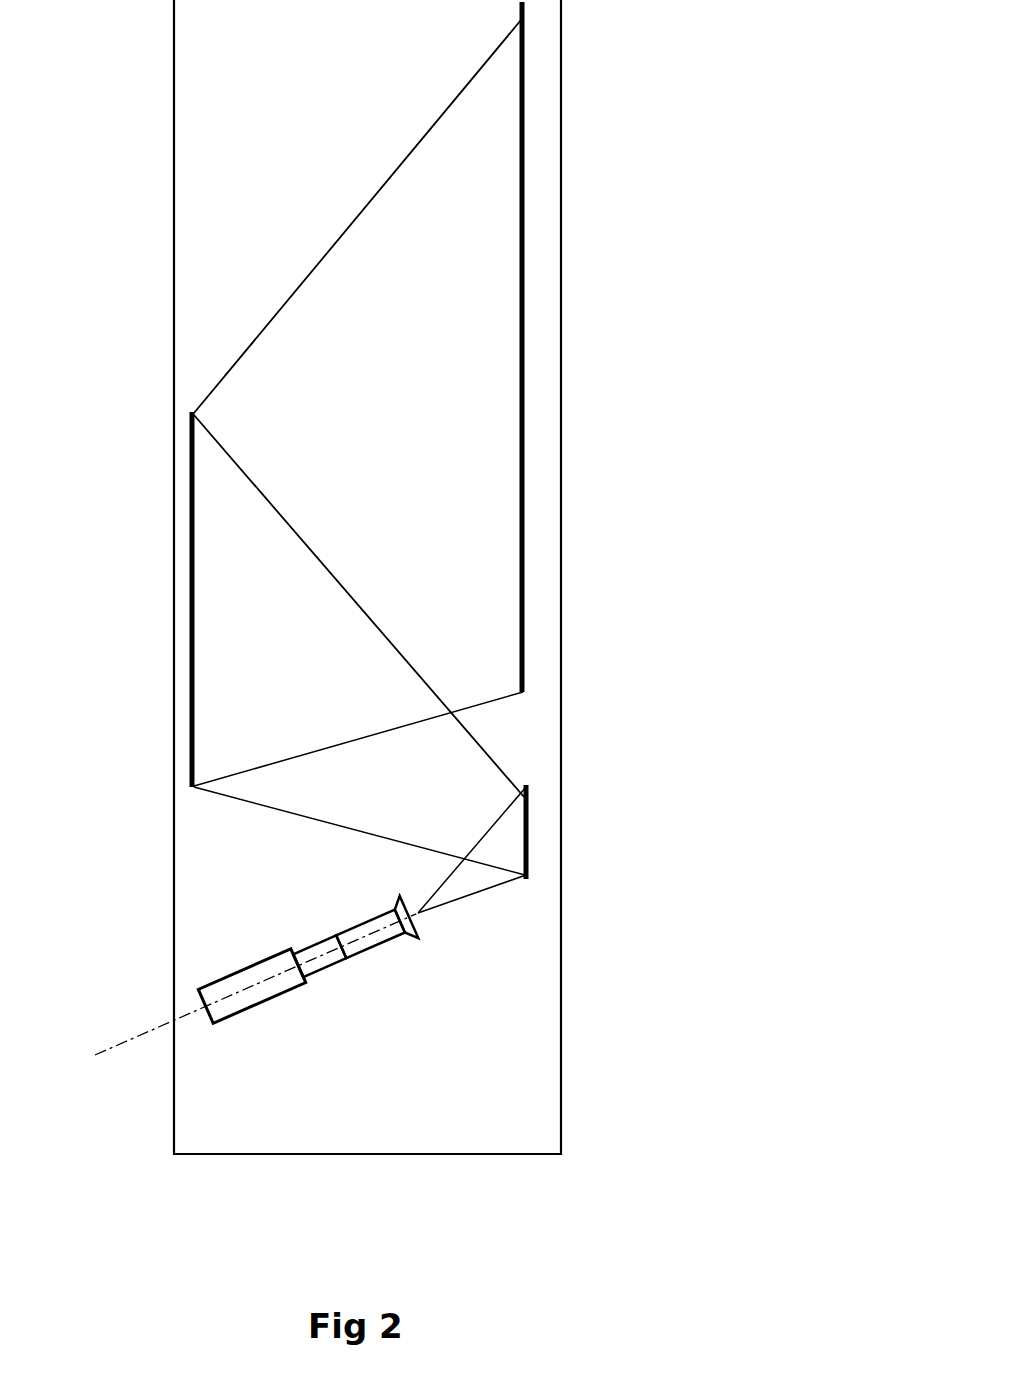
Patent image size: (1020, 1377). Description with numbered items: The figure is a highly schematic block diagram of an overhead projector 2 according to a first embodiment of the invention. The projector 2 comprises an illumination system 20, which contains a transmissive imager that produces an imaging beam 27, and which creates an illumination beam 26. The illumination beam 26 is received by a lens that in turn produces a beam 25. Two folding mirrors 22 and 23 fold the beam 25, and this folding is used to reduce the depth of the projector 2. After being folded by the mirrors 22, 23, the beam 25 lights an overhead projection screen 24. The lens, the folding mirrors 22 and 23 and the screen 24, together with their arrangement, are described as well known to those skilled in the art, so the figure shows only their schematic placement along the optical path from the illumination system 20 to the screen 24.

The overhead projector 2 is at (546, 72).
The illumination system 20 is at (280, 1000).
The folding mirror 22 is at (370, 942).
The folding mirror 23 is at (527, 855).
The overhead projection screen 24 is at (197, 652).
The beam 25 is at (523, 450).
The illumination beam 26 is at (330, 253).
The imaging beam 27 is at (320, 968).